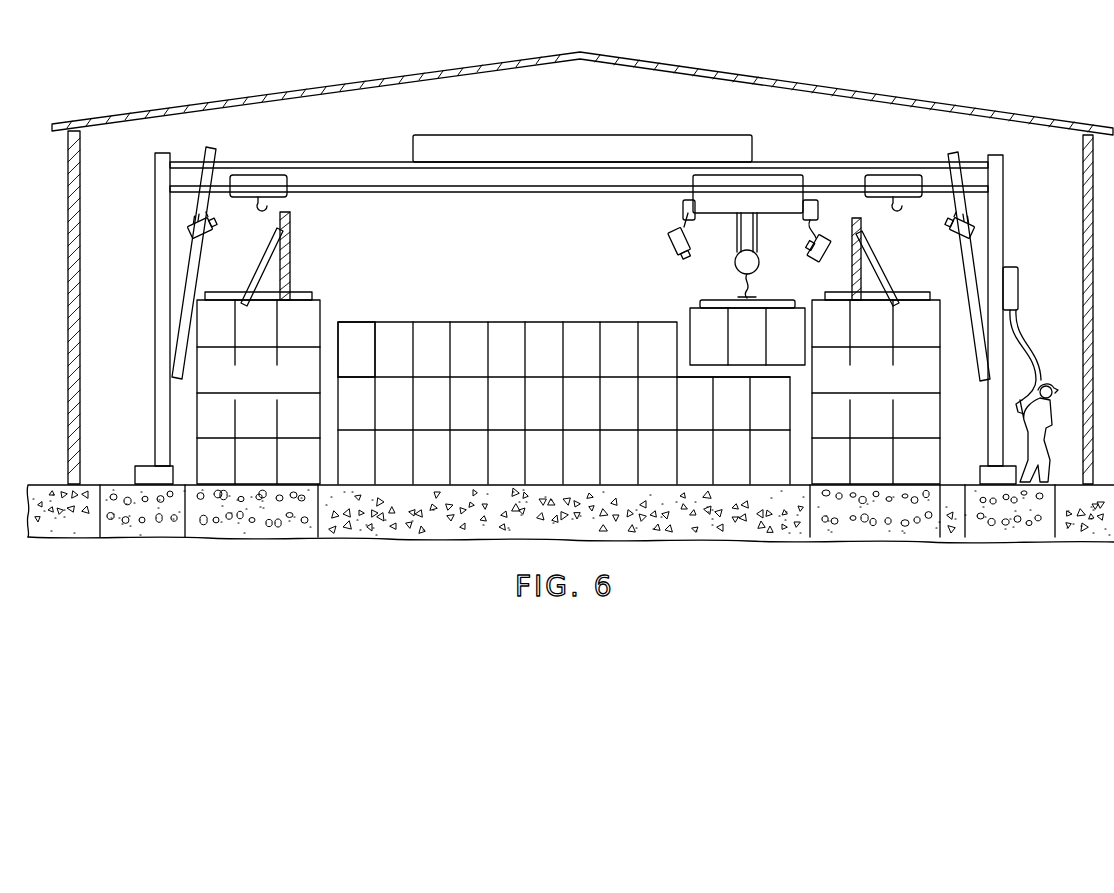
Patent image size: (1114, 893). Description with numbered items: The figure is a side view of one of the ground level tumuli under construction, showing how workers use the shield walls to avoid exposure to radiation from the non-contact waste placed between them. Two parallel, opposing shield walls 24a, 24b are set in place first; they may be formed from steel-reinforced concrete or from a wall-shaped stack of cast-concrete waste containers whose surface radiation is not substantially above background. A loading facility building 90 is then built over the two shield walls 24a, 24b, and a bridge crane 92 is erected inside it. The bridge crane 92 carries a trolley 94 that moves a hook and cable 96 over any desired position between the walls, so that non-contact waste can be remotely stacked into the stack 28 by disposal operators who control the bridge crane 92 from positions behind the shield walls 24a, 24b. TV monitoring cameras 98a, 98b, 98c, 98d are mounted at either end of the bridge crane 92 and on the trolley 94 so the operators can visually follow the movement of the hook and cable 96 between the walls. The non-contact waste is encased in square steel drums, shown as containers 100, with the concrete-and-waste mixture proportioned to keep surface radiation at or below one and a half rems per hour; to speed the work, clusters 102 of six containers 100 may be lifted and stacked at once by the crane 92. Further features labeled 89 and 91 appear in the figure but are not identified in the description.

The loading facility building 90 is at (274, 82).
The bridge crane 92 is at (520, 136).
The trolley 94 is at (760, 208).
The hook and cable 96 is at (741, 257).
The TV monitoring camera 98a is at (210, 239).
The TV monitoring camera 98b is at (956, 238).
The TV monitoring camera 98c is at (672, 240).
The TV monitoring camera 98d is at (826, 258).
The stack support frame 89 is at (311, 311).
The container 100 is at (388, 326).
The cluster 102 is at (728, 328).
The shield wall 24a is at (275, 397).
The shield wall 24b is at (892, 397).
The stack of non-contact waste 28 is at (564, 379).
The foundation footing 91 is at (304, 538).